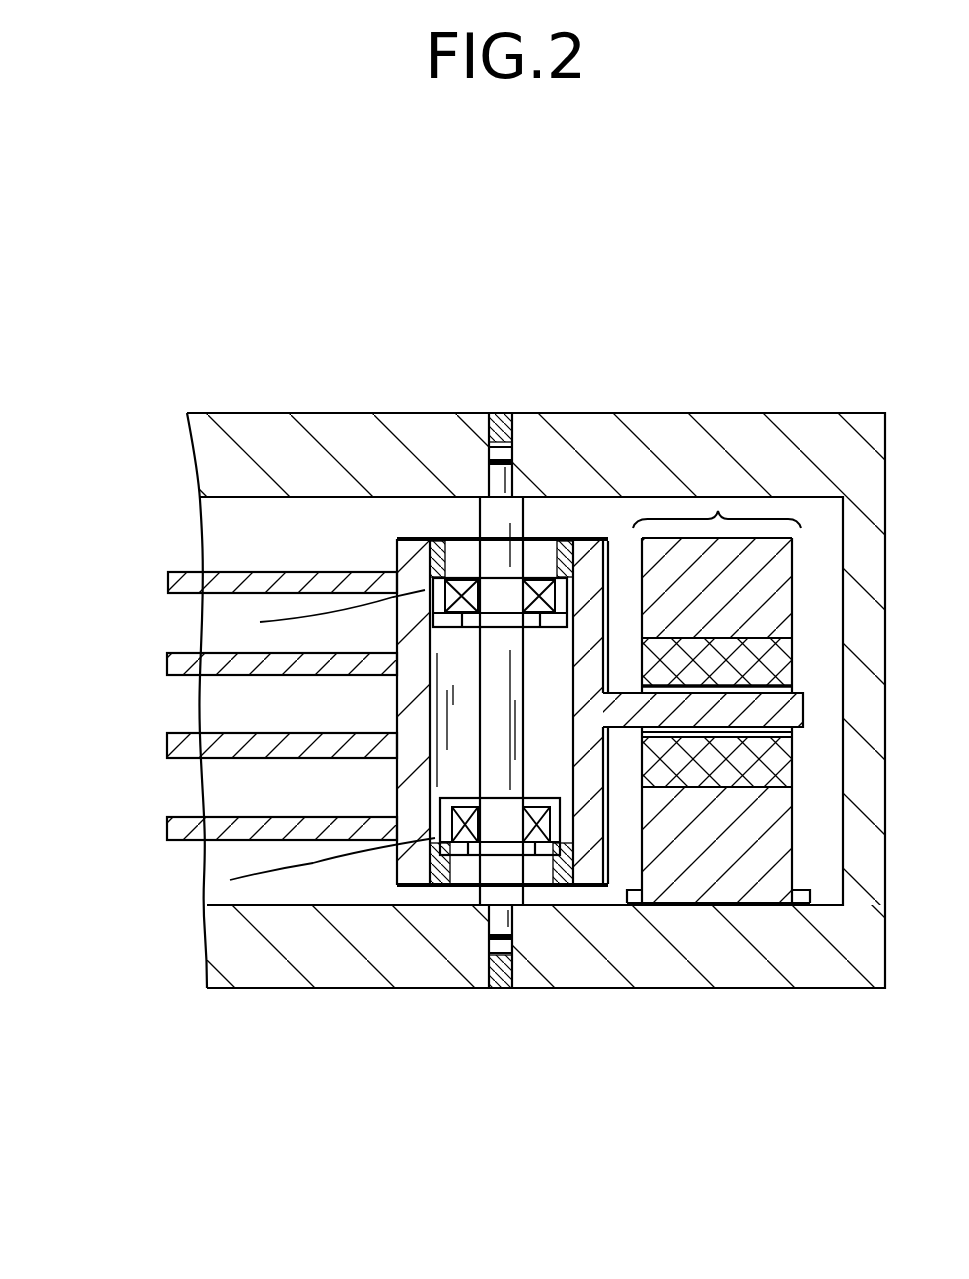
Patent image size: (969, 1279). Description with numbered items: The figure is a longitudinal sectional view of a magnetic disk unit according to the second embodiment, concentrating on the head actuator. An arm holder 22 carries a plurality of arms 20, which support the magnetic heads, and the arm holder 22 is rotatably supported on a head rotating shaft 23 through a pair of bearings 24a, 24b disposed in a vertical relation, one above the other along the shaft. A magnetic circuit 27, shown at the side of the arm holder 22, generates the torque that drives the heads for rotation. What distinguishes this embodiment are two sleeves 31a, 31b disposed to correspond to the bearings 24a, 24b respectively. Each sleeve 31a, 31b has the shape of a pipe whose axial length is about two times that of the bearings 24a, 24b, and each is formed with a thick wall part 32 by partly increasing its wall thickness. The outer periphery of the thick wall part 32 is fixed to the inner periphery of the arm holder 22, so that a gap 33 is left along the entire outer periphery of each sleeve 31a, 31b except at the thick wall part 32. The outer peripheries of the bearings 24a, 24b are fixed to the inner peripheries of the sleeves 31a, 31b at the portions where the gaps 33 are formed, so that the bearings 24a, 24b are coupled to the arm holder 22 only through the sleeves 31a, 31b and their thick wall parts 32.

The arm 20 is at (183, 733).
The arm holder 22 is at (428, 545).
The head rotating shaft 23 is at (482, 873).
The bearing 24a is at (538, 580).
The bearing 24b is at (523, 857).
The magnetic circuit 27 is at (728, 508).
The sleeve 31a is at (605, 557).
The sleeve 31b is at (600, 853).
The thick wall part 32 is at (437, 552).
The gap 33 is at (260, 622).